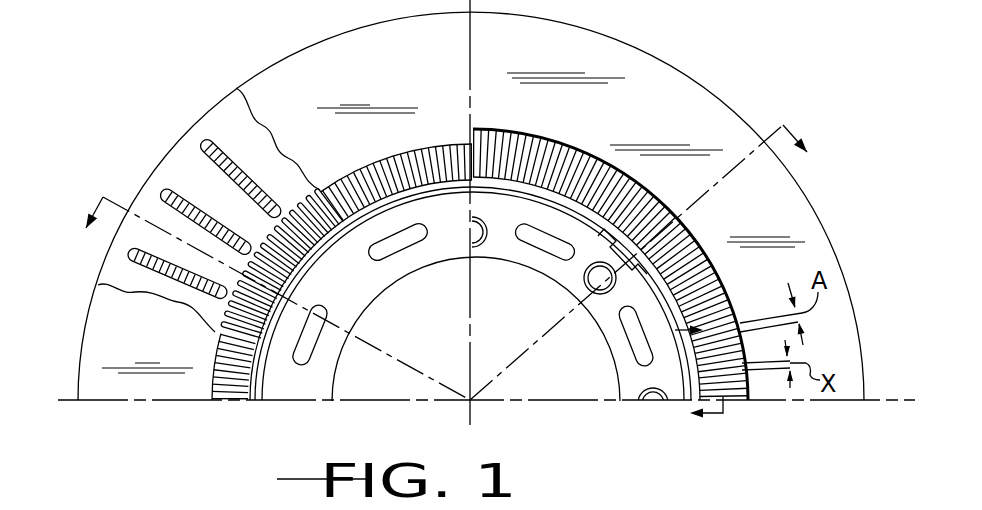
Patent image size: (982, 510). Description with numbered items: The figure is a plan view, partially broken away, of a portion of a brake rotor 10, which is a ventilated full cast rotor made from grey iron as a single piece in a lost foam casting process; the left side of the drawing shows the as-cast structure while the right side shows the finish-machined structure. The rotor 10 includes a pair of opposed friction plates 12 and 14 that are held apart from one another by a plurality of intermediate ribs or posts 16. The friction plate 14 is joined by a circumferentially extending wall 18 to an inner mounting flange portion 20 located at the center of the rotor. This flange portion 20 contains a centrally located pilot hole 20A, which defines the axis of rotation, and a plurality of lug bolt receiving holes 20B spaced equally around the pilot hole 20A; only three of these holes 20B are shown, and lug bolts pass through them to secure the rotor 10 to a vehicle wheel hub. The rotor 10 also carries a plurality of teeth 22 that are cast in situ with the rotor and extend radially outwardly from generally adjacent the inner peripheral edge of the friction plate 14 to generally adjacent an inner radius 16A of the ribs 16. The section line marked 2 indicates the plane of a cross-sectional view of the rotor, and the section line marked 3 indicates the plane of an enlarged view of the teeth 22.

The brake rotor 10 is at (826, 214).
The friction plate 12 is at (223, 122).
The friction plate 14 is at (300, 67).
The intermediate ribs or posts 16 is at (176, 172).
The inner radius of the ribs 16A is at (300, 253).
The circumferentially extending wall 18 is at (469, 320).
The inner mounting flange portion 20 is at (350, 305).
The pilot hole 20A is at (607, 345).
The lug bolt receiving holes 20B is at (647, 402).
The teeth 22 is at (750, 408).
The section line 2- 2 is at (437, 251).
The section line 3- 3 is at (688, 386).